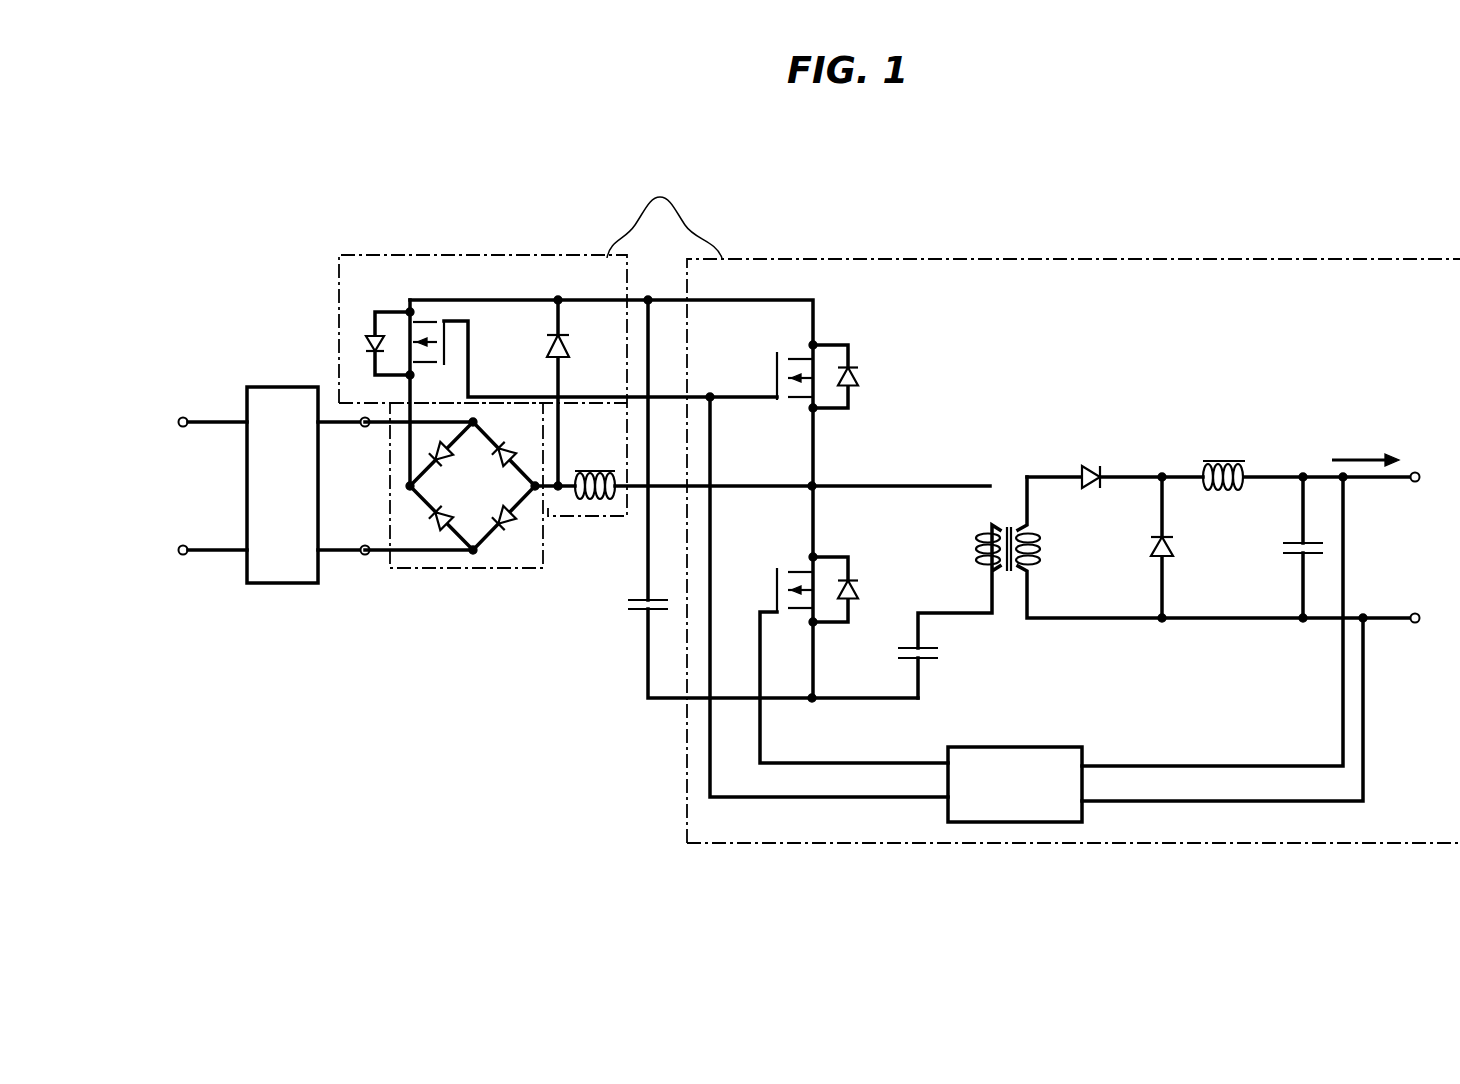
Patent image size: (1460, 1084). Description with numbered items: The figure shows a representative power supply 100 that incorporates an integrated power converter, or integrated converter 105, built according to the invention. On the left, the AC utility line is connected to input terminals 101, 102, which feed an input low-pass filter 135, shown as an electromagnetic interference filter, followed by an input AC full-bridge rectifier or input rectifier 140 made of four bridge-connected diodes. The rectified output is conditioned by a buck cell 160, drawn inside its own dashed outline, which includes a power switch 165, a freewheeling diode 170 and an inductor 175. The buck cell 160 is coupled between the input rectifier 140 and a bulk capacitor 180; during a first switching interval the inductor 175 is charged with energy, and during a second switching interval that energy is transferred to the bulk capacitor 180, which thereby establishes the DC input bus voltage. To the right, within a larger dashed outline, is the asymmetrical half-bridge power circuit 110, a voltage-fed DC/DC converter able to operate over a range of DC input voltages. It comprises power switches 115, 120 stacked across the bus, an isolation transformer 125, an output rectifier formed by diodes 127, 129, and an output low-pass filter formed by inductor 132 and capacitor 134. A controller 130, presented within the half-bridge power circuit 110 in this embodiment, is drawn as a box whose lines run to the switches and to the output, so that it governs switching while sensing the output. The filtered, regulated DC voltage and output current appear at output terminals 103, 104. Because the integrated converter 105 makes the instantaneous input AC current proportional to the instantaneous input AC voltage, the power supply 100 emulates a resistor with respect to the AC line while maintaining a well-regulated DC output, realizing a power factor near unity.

The power supply 100 is at (922, 206).
The input terminal 101 is at (183, 417).
The input terminal 102 is at (183, 555).
The output terminal 103 is at (1415, 472).
The output terminal 104 is at (1415, 623).
The integrated converter 105 is at (700, 329).
The half-bridge power circuit 110 is at (1445, 301).
The power switch 115 is at (782, 405).
The power switch 120 is at (782, 565).
The isolation transformer 125 is at (1005, 478).
The diode 127 is at (1087, 465).
The diode 129 is at (1150, 550).
The controller 130 is at (1038, 747).
The inductor 132 is at (1222, 460).
The capacitor 134 is at (1285, 545).
The input low-pass filter 135 is at (300, 502).
The input rectifier 140 is at (447, 570).
The buck cell 160 is at (515, 254).
The power switch 165 is at (442, 312).
The freewheeling diode 170 is at (547, 350).
The inductor 175 is at (590, 470).
The bulk capacitor 180 is at (640, 600).